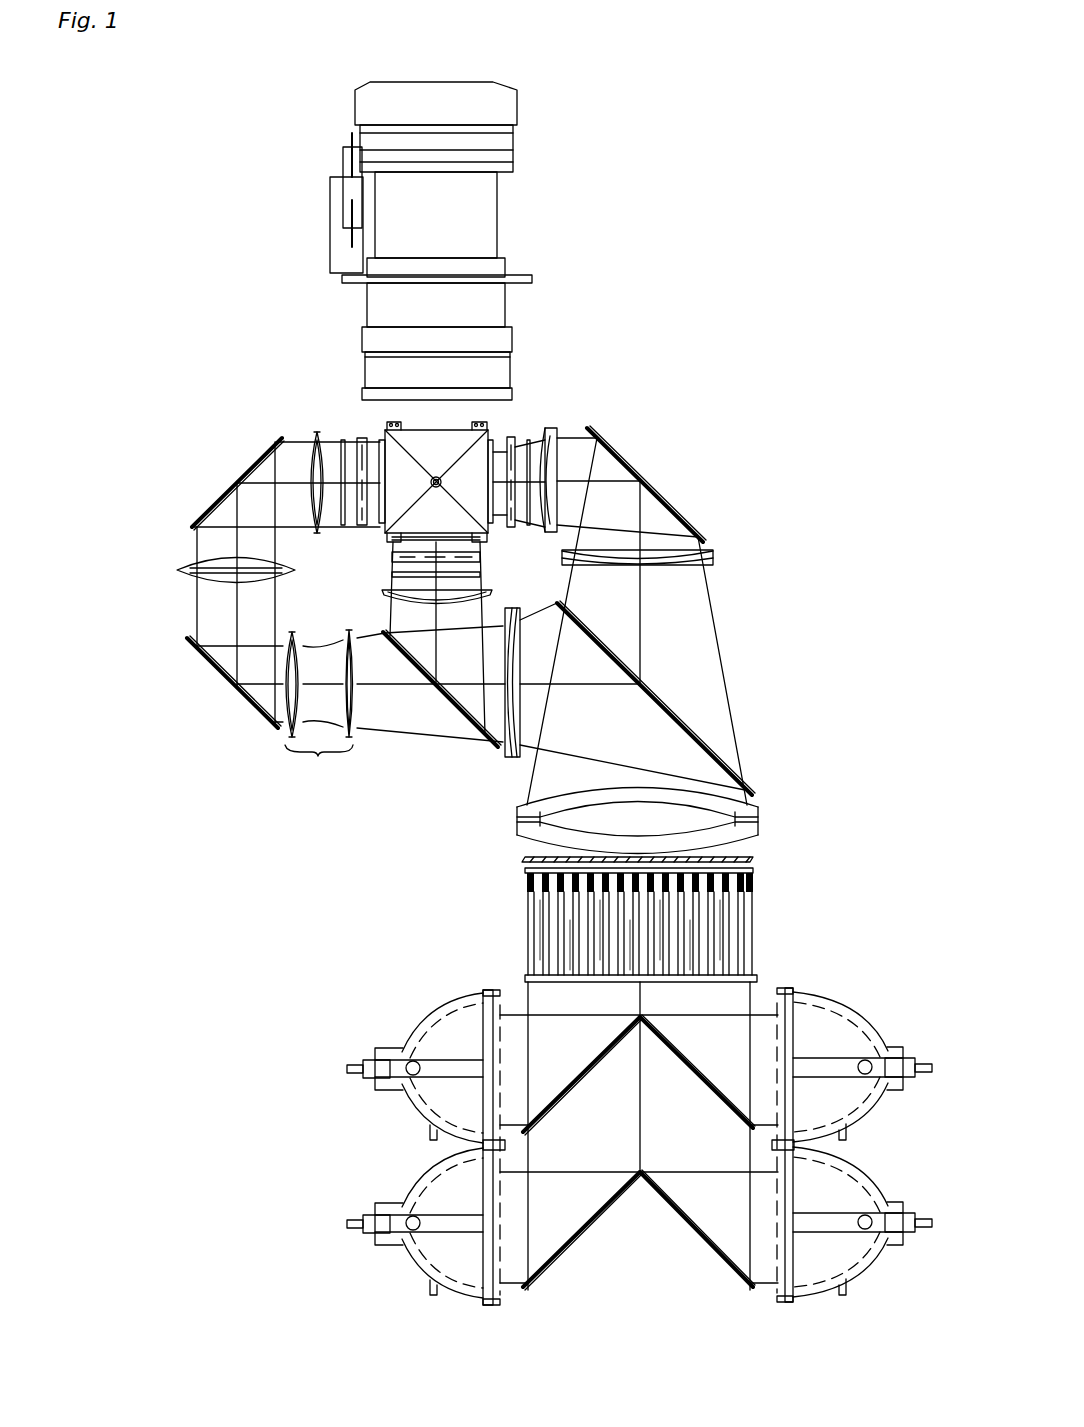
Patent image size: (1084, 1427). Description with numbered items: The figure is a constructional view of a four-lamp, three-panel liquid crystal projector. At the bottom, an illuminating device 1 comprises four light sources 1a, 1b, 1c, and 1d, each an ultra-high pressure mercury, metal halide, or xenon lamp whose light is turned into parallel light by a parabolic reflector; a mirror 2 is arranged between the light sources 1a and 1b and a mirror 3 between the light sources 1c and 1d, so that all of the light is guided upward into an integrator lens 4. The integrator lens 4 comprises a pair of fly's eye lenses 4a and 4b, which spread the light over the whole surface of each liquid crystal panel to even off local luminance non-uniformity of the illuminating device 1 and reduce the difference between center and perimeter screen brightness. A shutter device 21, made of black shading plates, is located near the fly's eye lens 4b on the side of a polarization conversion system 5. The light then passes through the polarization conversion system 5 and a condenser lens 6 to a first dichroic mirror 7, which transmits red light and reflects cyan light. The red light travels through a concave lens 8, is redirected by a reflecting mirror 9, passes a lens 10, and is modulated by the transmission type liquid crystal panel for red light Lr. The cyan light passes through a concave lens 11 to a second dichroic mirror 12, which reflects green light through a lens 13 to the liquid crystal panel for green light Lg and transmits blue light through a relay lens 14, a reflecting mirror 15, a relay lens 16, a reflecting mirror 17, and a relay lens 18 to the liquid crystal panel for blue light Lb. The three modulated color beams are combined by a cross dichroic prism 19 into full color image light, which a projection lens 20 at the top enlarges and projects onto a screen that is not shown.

The illuminating device 1 is at (440, 960).
The light source 1a is at (887, 1045).
The light source 1b is at (385, 1048).
The light source 1c is at (887, 1200).
The light source 1d is at (385, 1203).
The mirror 2 is at (562, 1100).
The mirror 3 is at (700, 1235).
The integrator lens 4 is at (679, 925).
The fly's eye lens 4a is at (808, 880).
The fly's eye lens 4b is at (756, 875).
The polarization conversion system 5 is at (755, 858).
The condenser lens 6 is at (760, 822).
The first dichroic mirror 7 is at (720, 755).
The concave lens 8 is at (716, 560).
The reflecting mirror 9 is at (632, 463).
The lens 10 is at (560, 428).
The concave lens 11 is at (512, 760).
The second dichroic mirror 12 is at (458, 712).
The lens 13 is at (476, 592).
The relay lens 14 is at (319, 706).
The reflecting mirror 15 is at (222, 676).
The relay lens 16 is at (178, 568).
The reflecting mirror 17 is at (247, 468).
The relay lens 18 is at (305, 438).
The cross dichroic prism 19 is at (436, 430).
The projection lens 20 is at (497, 212).
The shutter device 21 is at (500, 872).
The liquid crystal panel for blue light Lb is at (340, 432).
The liquid crystal panel for red light Lr is at (518, 430).
The liquid crystal panel for green light Lg is at (376, 565).